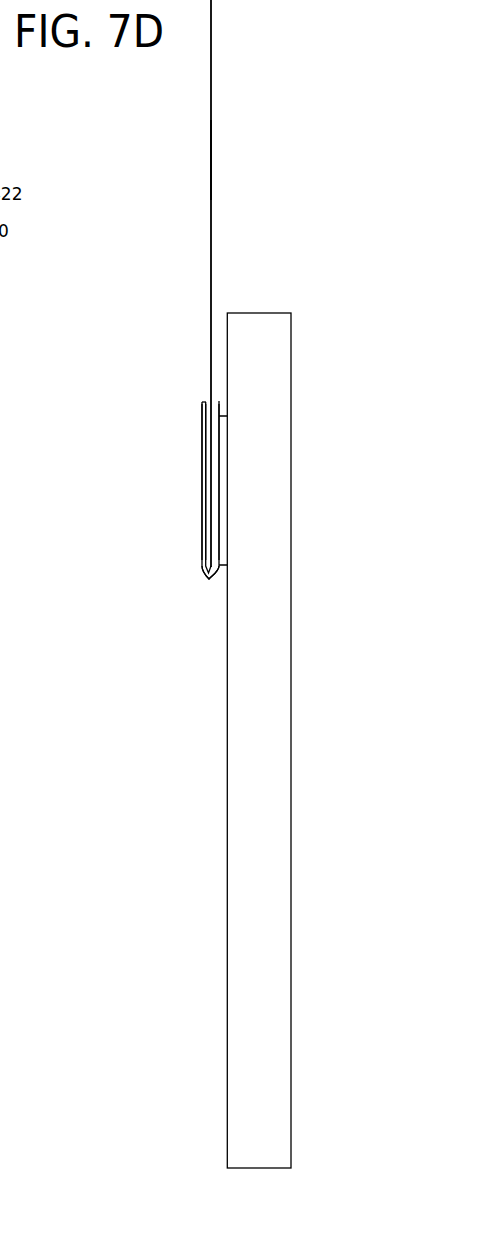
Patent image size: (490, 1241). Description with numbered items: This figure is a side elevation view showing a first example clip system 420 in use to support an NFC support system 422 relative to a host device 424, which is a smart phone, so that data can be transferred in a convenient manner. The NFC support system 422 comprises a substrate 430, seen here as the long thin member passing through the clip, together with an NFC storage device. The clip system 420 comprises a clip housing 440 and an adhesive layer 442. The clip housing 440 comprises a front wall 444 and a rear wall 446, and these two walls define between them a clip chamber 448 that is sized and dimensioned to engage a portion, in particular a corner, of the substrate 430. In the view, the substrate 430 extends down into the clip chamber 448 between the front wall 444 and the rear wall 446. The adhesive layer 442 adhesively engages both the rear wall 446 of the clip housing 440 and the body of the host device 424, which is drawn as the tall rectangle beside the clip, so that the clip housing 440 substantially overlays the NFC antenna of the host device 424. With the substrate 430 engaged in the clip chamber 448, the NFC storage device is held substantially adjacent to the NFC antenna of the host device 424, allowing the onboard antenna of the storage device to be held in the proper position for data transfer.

The NFC support system 422 is at (213, 97).
The substrate 430 is at (212, 146).
The host device 424 is at (291, 345).
The clip system 420 is at (203, 422).
The clip housing 440 is at (203, 452).
The clip chamber 448 is at (206, 401).
The front wall 444 is at (202, 497).
The rear wall 446 is at (220, 474).
The adhesive layer 442 is at (222, 568).